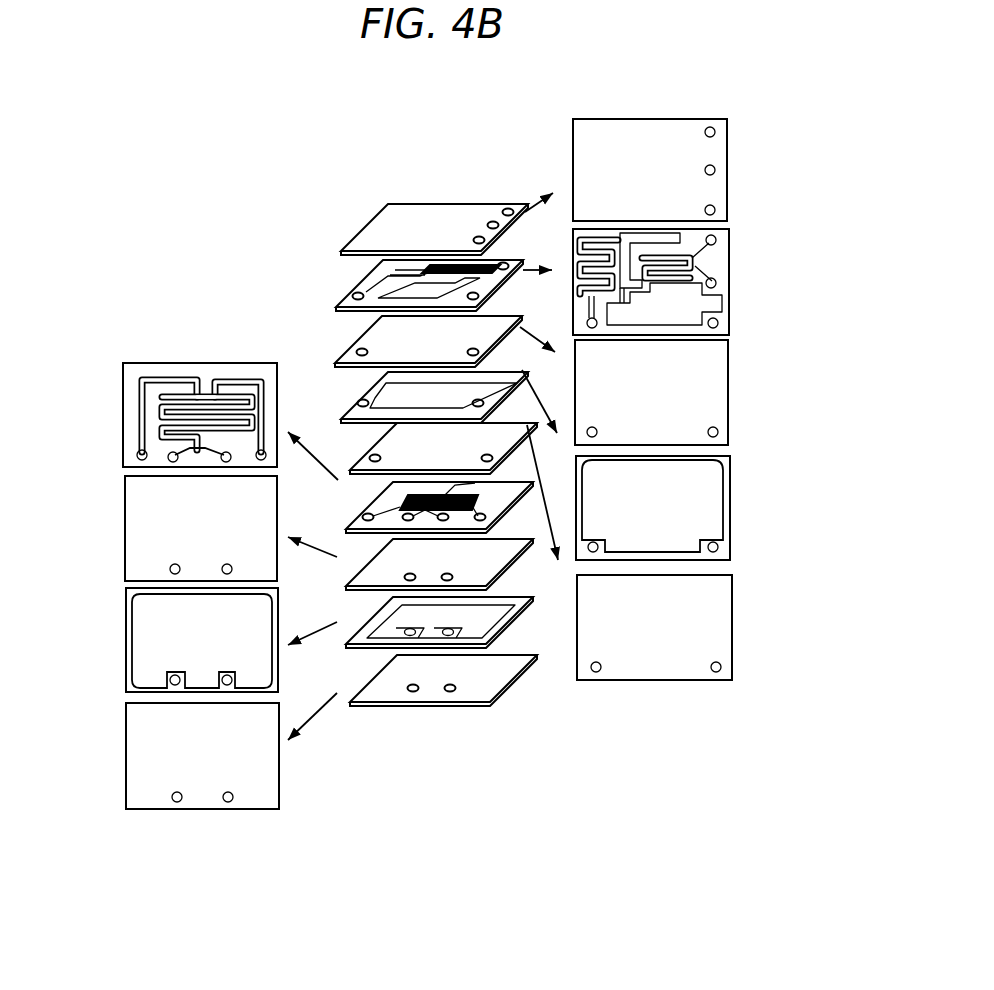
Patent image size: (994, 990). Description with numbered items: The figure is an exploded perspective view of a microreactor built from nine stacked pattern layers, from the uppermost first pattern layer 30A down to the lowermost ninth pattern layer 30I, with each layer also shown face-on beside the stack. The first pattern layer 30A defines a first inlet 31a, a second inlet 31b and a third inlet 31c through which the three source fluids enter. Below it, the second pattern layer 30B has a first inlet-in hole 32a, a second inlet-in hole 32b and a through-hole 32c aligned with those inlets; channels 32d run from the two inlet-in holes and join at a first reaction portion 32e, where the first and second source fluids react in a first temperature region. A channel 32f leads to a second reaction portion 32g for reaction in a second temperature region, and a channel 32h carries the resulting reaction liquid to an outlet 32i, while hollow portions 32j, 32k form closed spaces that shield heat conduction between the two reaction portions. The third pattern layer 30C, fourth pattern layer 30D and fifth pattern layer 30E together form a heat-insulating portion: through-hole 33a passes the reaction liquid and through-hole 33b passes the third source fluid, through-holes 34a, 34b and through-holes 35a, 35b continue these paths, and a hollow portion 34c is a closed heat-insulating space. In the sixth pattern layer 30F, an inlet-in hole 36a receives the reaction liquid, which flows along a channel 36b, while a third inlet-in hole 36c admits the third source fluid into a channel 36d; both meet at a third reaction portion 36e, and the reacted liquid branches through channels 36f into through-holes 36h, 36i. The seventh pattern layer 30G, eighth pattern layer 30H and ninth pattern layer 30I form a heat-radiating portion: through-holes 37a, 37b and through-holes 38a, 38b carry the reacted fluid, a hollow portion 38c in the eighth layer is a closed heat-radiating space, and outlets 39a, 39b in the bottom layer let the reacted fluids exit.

The first pattern layer 30A is at (727, 146).
The second pattern layer 30B is at (573, 266).
The third pattern layer 30C is at (729, 385).
The fourth pattern layer 30D is at (731, 508).
The fifth pattern layer 30E is at (733, 612).
The sixth pattern layer 30F is at (123, 432).
The seventh pattern layer 30G is at (125, 530).
The eighth pattern layer 30H is at (126, 633).
The ninth pattern layer 30I is at (126, 750).
The first inlet 31a is at (710, 127).
The second inlet 31b is at (715, 168).
The third inlet 31c is at (715, 208).
The first inlet-in hole 32a is at (716, 240).
The second inlet-in hole 32b is at (717, 283).
The through-hole 32c is at (719, 323).
The channels 32d is at (703, 248).
The first reaction portion 32e is at (663, 257).
The channel 32f is at (618, 300).
The second reaction portion 32g is at (587, 237).
The channel 32h is at (589, 308).
The outlet 32i is at (586, 327).
The hollow portion 32j is at (625, 238).
The hollow portion 32k is at (667, 328).
The through-hole 33a is at (598, 432).
The through-hole 33b is at (719, 432).
The through-hole 34a is at (598, 543).
The through-hole 34b is at (719, 547).
The hollow portion 34c is at (712, 475).
The through-hole 35a is at (596, 673).
The through-hole 35b is at (721, 667).
The inlet-in hole 36a is at (136, 457).
The channel 36b is at (140, 395).
The third inlet-in hole 36c is at (266, 455).
The channel 36d is at (262, 390).
The third reaction portion 36e is at (222, 392).
The channels 36f is at (195, 465).
The through-hole 36h is at (171, 463).
The through-hole 36i is at (227, 463).
The through-hole 37a is at (175, 575).
The through-hole 37b is at (227, 575).
The through-hole 38a is at (175, 686).
The through-hole 38b is at (227, 686).
The hollow portion 38c is at (260, 670).
The outlet 39a is at (177, 803).
The outlet 39b is at (228, 803).